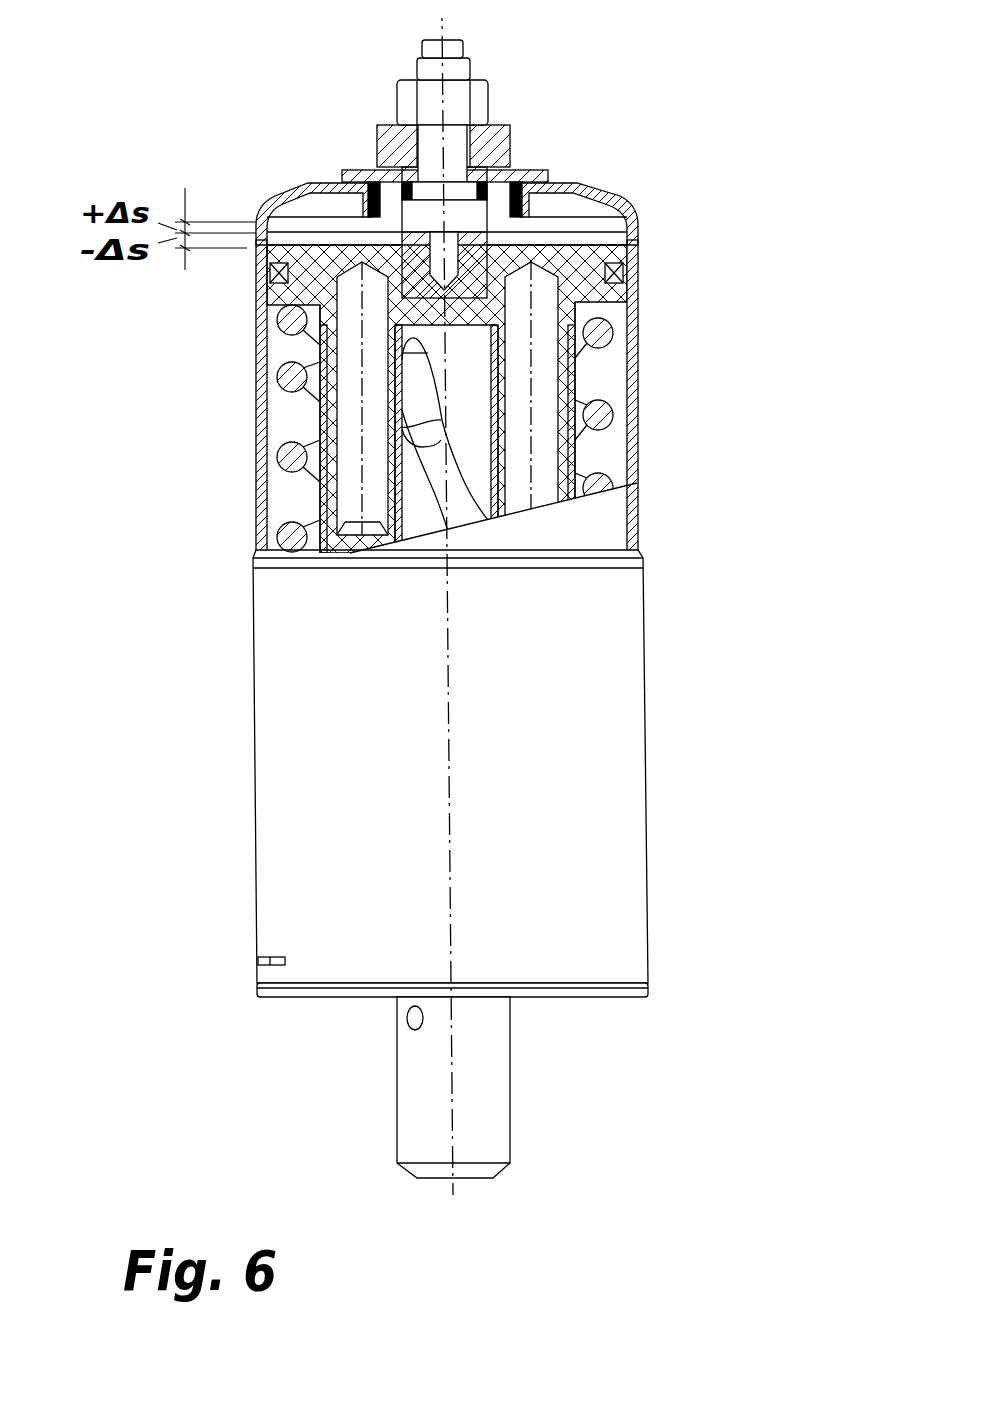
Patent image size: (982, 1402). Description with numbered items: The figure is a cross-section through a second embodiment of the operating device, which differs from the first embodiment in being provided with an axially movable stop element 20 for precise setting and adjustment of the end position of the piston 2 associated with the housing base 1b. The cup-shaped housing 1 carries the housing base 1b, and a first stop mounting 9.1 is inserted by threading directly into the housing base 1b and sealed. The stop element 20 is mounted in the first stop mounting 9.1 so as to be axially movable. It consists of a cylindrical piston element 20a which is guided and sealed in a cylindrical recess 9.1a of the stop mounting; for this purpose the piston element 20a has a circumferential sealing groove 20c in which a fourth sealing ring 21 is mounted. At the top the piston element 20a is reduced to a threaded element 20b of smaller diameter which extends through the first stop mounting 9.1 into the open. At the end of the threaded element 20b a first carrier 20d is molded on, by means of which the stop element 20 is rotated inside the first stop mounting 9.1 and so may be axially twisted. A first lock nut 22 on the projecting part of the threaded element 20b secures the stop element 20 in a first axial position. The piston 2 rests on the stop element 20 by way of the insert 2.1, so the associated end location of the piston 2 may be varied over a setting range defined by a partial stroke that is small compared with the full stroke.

The housing 1 is at (657, 491).
The housing base 1b is at (303, 197).
The piston 2 is at (593, 445).
The insert 2.1 is at (473, 270).
The first stop mounting 9.1 is at (667, 203).
The cylindrical recess 9.1a is at (587, 217).
The stop element 20 is at (298, 113).
The piston element 20a is at (435, 198).
The threaded element 20b is at (602, 136).
The sealing groove 20c is at (329, 154).
The first carrier 20d is at (442, 43).
The fourth sealing ring 21 is at (604, 257).
The first lock nut 22 is at (453, 106).